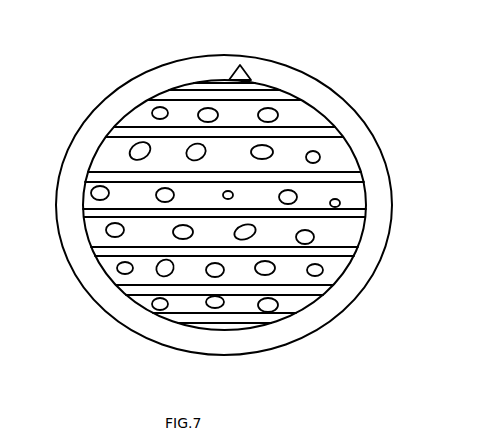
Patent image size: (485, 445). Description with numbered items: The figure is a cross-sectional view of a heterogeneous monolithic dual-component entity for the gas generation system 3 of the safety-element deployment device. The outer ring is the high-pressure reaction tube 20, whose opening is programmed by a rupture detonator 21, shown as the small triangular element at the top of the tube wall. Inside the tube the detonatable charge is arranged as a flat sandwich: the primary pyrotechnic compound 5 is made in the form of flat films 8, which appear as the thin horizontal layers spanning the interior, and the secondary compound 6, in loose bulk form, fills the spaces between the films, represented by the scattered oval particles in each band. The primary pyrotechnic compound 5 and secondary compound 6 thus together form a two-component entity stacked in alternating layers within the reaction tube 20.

The gas generation system 3 is at (111, 79).
The high-pressure reaction tube 20 is at (310, 90).
The rupture detonator 21 is at (241, 65).
The primary pyrotechnic compound 5 is at (254, 205).
The secondary compound 6 is at (321, 156).
The film 8 is at (343, 220).